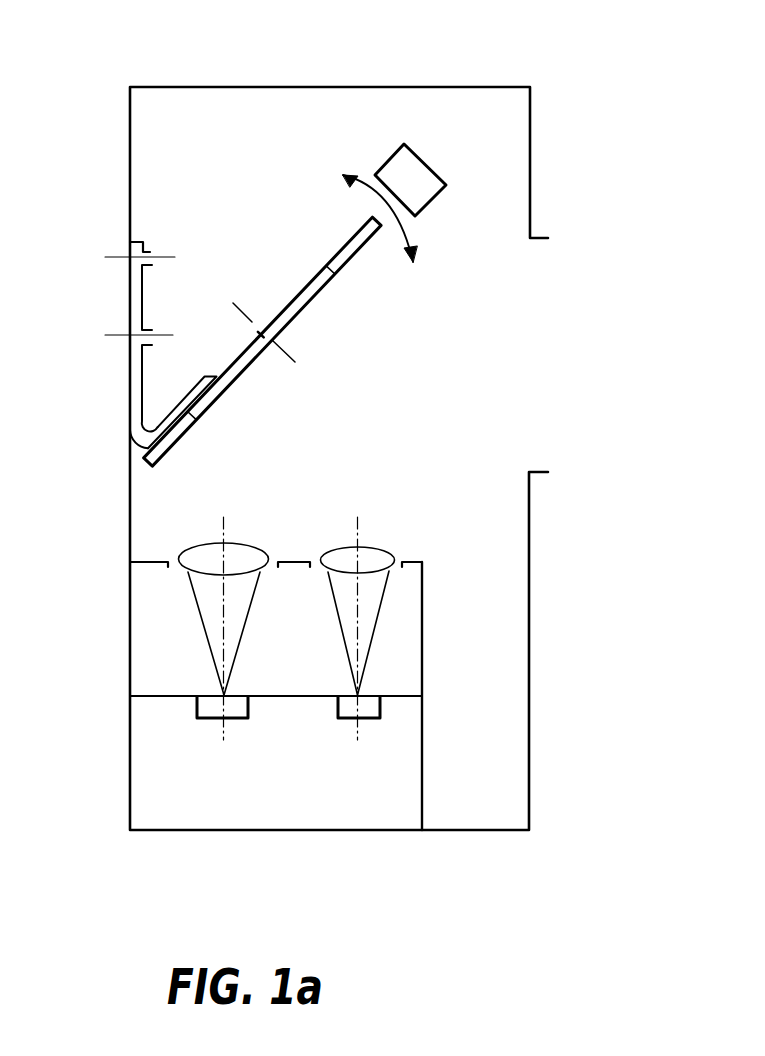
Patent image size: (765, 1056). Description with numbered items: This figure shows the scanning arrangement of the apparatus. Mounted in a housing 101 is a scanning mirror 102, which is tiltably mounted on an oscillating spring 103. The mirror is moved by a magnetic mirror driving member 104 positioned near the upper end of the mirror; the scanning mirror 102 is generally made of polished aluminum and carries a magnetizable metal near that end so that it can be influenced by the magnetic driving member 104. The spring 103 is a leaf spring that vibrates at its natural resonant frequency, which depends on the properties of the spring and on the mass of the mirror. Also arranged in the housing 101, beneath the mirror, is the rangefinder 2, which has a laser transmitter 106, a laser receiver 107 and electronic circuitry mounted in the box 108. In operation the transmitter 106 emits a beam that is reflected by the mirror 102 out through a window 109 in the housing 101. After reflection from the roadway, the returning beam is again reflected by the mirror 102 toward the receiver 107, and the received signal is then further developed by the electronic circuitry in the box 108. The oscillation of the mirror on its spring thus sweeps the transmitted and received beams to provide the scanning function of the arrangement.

The housing 101 is at (265, 86).
The scanning mirror 102 is at (343, 247).
The oscillating spring 103 is at (130, 298).
The magnetic mirror driving member 104 is at (413, 170).
The laser transmitter 106 is at (348, 709).
The laser receiver 107 is at (199, 710).
The box 108 is at (412, 770).
The window 109 is at (530, 310).
The rangefinder 2 is at (147, 758).